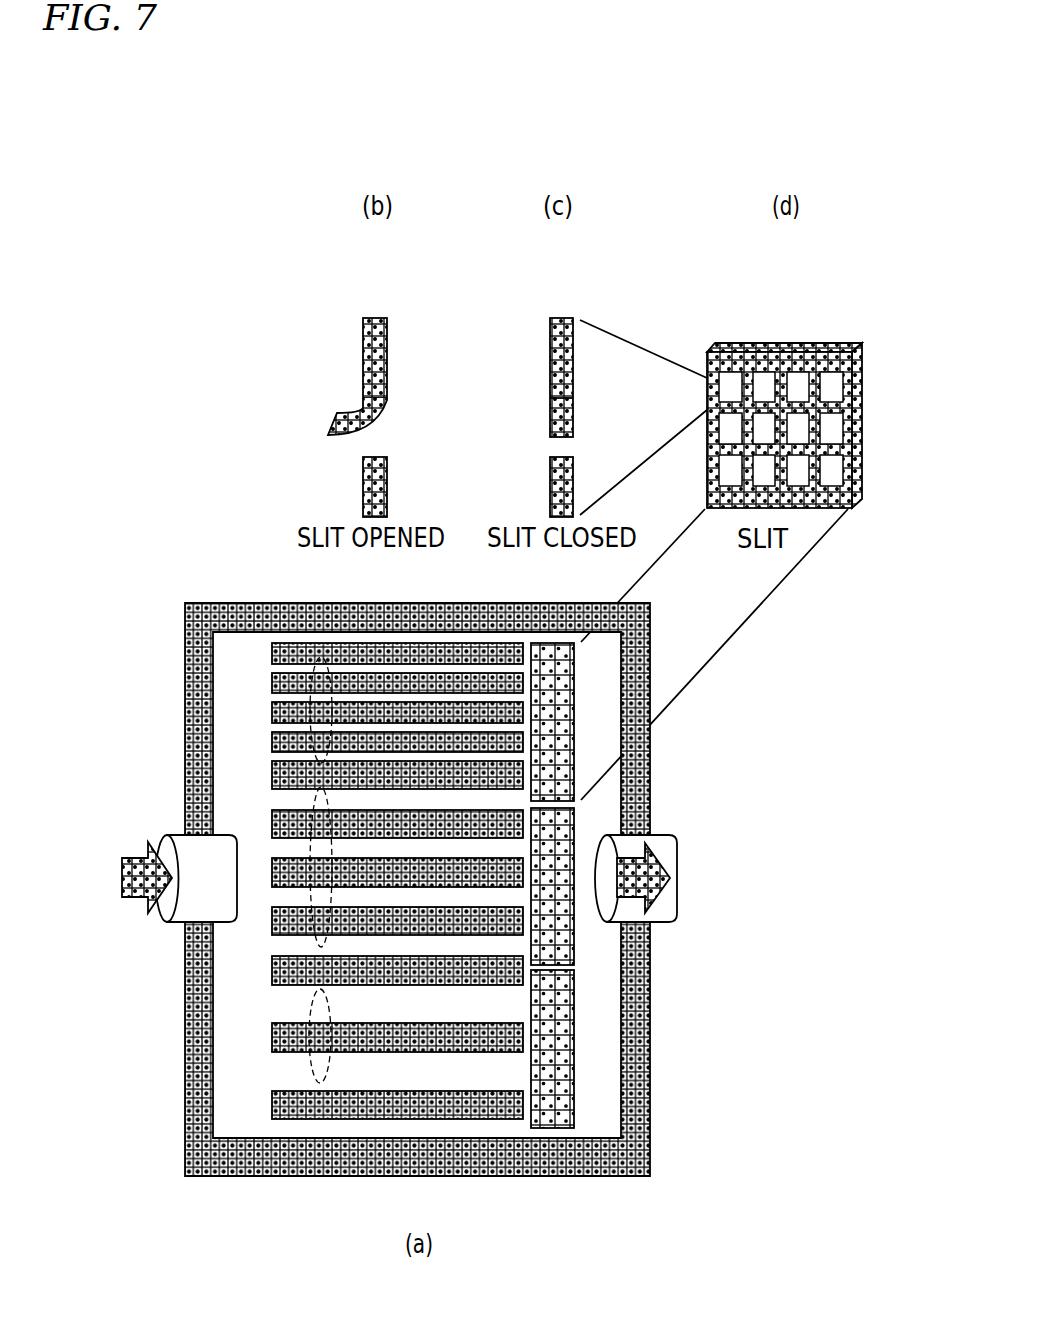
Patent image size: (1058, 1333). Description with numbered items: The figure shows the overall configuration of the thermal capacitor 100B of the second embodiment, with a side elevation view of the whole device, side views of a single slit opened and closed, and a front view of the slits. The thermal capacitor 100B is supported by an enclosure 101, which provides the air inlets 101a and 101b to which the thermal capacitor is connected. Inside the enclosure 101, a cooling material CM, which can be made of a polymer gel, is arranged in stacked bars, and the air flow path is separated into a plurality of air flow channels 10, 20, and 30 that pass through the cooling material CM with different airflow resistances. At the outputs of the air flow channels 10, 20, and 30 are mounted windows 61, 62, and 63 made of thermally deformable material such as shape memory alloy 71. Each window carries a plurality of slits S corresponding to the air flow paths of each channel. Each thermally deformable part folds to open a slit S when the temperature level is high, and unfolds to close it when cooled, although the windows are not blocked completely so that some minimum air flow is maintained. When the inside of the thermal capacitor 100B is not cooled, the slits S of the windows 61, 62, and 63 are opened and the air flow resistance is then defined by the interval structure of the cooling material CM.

The shape memory alloy 71 is at (550, 392).
The slit S is at (843, 390).
The thermal capacitor 100B is at (158, 610).
The enclosure 101 is at (650, 635).
The cooling material CM is at (303, 643).
The air flow channel 30 is at (272, 696).
The air flow channel 20 is at (272, 830).
The air flow channel 10 is at (305, 1011).
The window 63 is at (575, 753).
The window 62 is at (575, 953).
The window 61 is at (575, 1108).
The air inlet 101a is at (152, 912).
The air inlet 101b is at (677, 905).